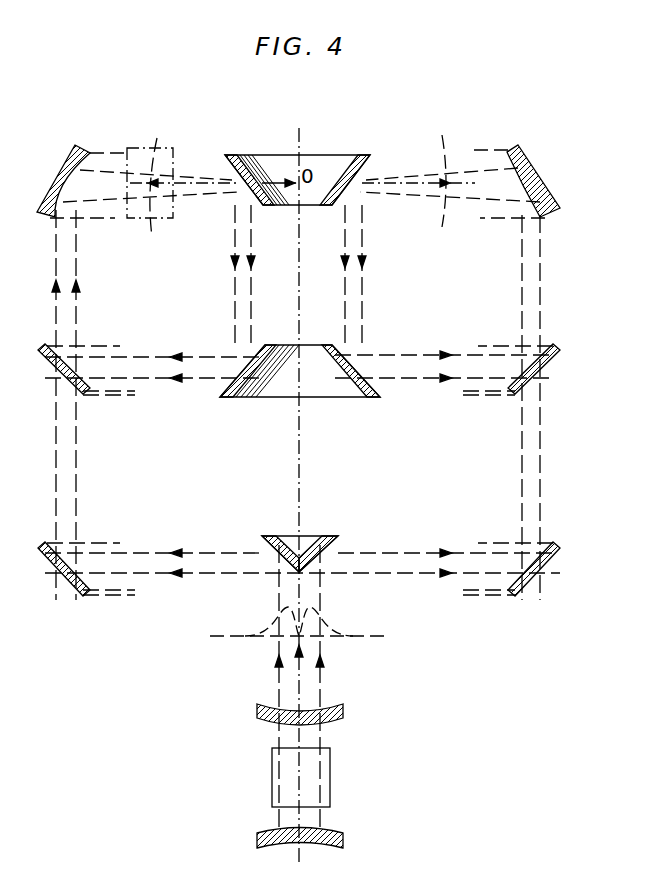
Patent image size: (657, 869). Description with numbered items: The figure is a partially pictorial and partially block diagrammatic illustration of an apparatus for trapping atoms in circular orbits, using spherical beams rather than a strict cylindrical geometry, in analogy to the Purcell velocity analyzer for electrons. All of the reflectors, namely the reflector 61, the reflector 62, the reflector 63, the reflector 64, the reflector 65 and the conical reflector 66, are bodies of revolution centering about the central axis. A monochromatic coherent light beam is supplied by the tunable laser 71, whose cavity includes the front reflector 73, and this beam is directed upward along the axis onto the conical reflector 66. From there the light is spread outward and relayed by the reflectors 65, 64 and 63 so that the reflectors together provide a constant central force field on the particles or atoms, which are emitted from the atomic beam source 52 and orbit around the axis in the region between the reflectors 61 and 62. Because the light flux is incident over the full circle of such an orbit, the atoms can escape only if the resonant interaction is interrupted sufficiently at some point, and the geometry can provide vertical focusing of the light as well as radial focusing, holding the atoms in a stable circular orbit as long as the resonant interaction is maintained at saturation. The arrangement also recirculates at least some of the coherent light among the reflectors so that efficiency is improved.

The atomic beam source 52 is at (165, 147).
The circularly symmetrical reflector 61 is at (75, 152).
The reflector 62 is at (275, 153).
The reflector 63 is at (281, 378).
The reflector 64 is at (60, 364).
The reflector 65 is at (64, 570).
The conical reflector 66 is at (335, 540).
The tunable laser 71 is at (330, 778).
The front reflector 73 is at (258, 710).